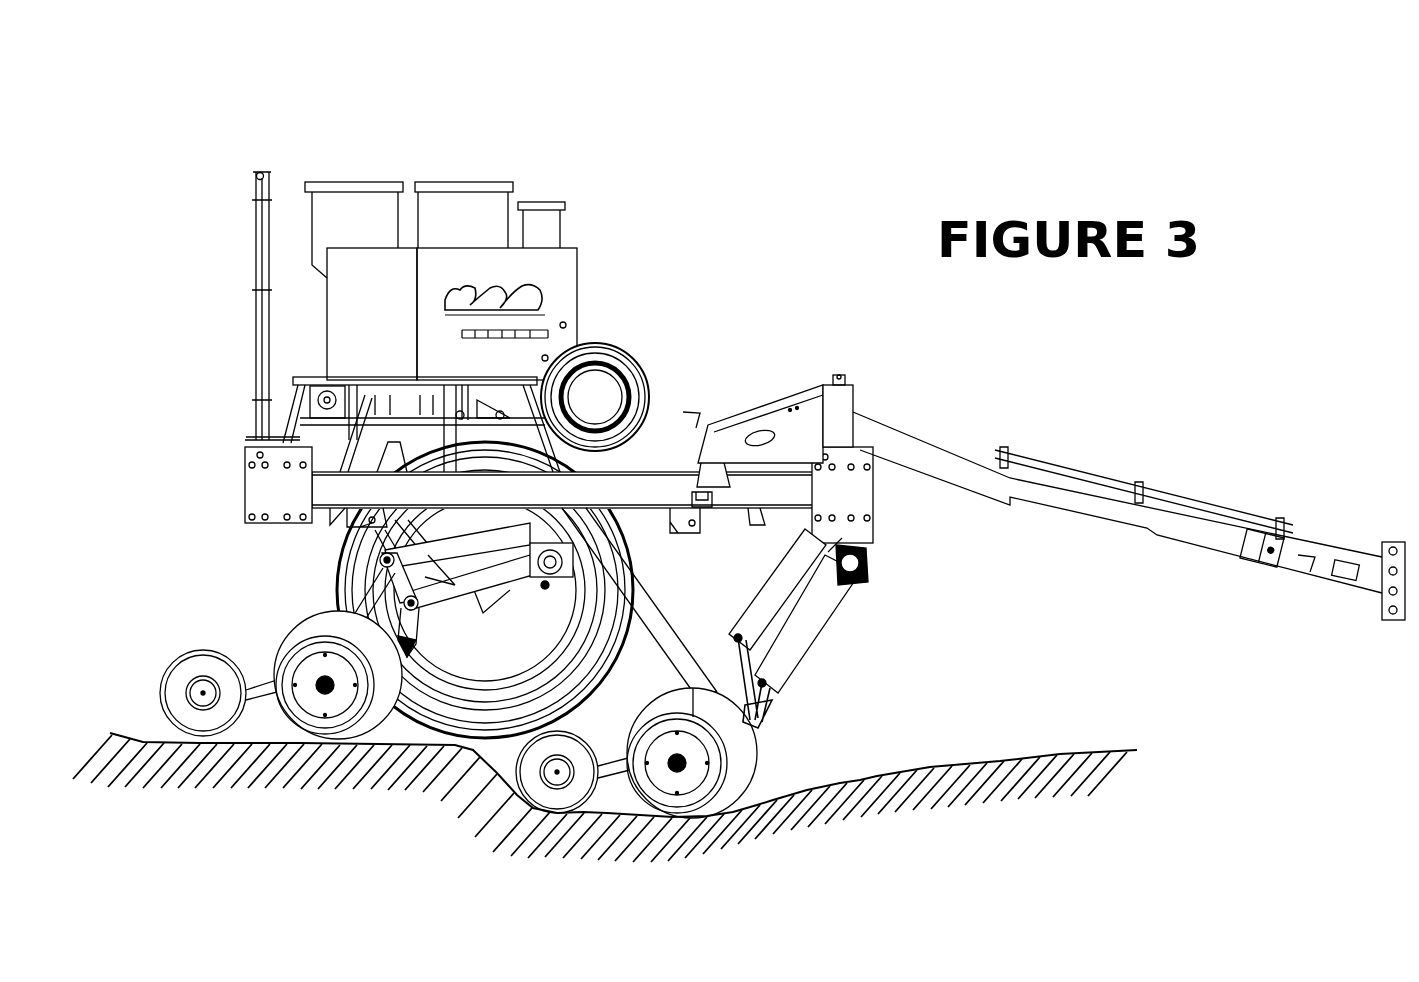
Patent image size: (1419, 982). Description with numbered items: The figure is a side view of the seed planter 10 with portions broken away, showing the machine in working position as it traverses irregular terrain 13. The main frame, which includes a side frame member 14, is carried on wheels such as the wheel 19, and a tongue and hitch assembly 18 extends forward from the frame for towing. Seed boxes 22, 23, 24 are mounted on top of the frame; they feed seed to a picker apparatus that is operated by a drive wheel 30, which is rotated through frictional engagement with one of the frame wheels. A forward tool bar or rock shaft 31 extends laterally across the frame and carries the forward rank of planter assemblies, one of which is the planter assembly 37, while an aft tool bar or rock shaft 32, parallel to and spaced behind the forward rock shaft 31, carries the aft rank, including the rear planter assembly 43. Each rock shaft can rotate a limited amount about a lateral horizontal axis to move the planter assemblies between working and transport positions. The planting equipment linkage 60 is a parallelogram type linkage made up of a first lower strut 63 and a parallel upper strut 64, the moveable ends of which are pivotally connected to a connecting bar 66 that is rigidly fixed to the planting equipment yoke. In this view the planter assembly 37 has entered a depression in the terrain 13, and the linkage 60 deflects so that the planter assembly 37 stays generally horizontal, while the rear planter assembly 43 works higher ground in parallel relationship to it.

The seed planter 10 is at (588, 112).
The irregular terrain 13 is at (930, 770).
The side frame member 14 is at (623, 488).
The tongue and hitch assembly 18 is at (1043, 462).
The wheel 19 is at (335, 572).
The seed box 22 is at (548, 228).
The seed box 23 is at (483, 205).
The seed box 24 is at (374, 205).
The drive wheel 30 is at (610, 348).
The forward rock shaft 31 is at (870, 560).
The aft rock shaft 32 is at (543, 590).
The planter assembly 37 is at (762, 755).
The planter assembly 43 is at (240, 640).
The planting equipment linkage 60 is at (822, 643).
The first lower strut 63 is at (828, 604).
The upper strut 64 is at (780, 582).
The connecting bar 66 is at (735, 655).